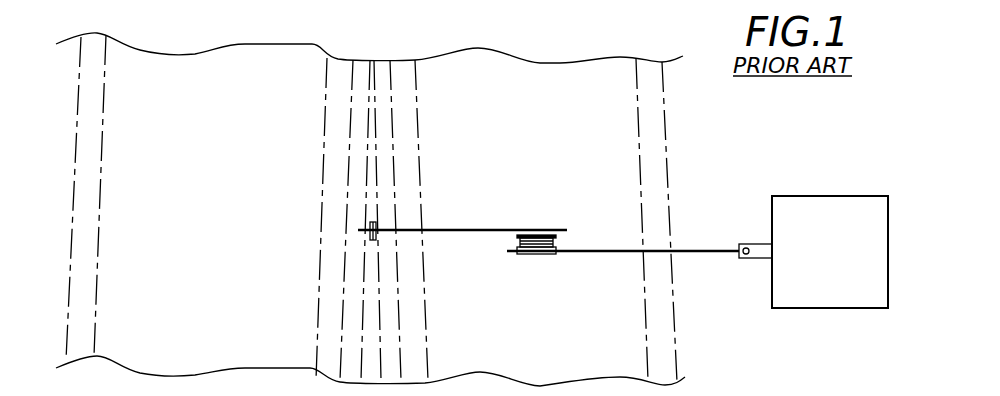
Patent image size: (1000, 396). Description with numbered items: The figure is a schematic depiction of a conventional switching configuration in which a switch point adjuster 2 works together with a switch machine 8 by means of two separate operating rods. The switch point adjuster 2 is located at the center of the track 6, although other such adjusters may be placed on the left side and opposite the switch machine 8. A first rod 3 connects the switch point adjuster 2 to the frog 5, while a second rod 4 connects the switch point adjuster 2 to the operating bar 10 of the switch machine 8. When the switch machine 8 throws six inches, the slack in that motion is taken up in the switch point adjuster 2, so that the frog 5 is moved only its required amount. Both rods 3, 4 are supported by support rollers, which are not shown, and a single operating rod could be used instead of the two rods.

The switch point adjuster 2 is at (533, 255).
The first rod 3 is at (478, 230).
The second rod 4 is at (692, 253).
The frog 5 is at (372, 243).
The track 6 is at (421, 355).
The switch machine 8 is at (862, 196).
The operating bar 10 is at (752, 244).